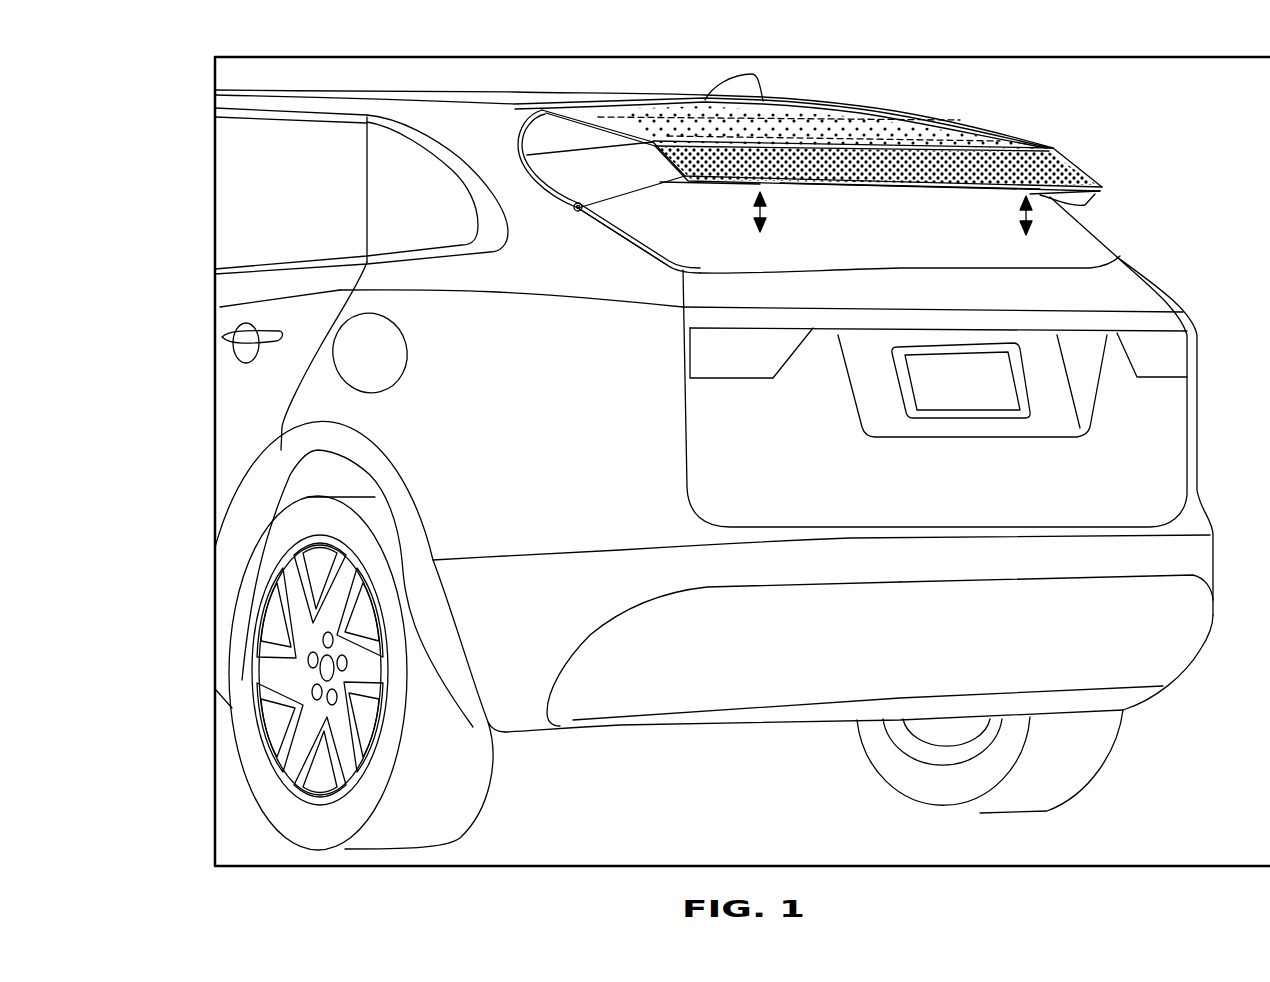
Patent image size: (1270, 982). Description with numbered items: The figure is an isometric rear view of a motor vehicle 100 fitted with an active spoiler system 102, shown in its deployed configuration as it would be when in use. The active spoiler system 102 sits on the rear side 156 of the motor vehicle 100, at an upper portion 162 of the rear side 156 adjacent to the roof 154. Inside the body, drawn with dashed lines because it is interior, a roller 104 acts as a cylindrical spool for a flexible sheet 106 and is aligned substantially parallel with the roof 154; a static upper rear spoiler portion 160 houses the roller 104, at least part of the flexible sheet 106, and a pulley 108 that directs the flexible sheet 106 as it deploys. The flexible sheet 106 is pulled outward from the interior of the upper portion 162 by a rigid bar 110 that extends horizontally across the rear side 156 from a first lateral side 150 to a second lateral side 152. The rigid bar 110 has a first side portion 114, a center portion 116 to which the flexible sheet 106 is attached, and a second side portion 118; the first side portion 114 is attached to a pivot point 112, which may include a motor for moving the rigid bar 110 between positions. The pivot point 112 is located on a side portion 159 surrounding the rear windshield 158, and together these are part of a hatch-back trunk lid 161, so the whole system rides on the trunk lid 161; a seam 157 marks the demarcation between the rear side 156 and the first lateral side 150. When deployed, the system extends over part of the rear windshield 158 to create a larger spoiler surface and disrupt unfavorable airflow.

The motor vehicle 100 is at (253, 393).
The active spoiler system 102 is at (1072, 150).
The roller 104 is at (838, 118).
The flexible sheet 106 is at (1062, 170).
The pulley 108 is at (975, 125).
The rigid bar 110 is at (955, 190).
The pivot point 112 is at (578, 212).
The first side portion 114 is at (660, 190).
The center portion 116 is at (827, 189).
The second side portion 118 is at (1086, 196).
The first lateral side 150 is at (512, 430).
The second lateral side 152 is at (1156, 233).
The roof 154 is at (577, 100).
The rear side 156 is at (968, 300).
The seam 157 is at (550, 196).
The rear windshield 158 is at (925, 240).
The side portion 159 is at (618, 238).
The static upper rear spoiler portion 160 is at (515, 136).
The hatch-back trunk lid 161 is at (810, 468).
The upper portion 162 is at (585, 170).